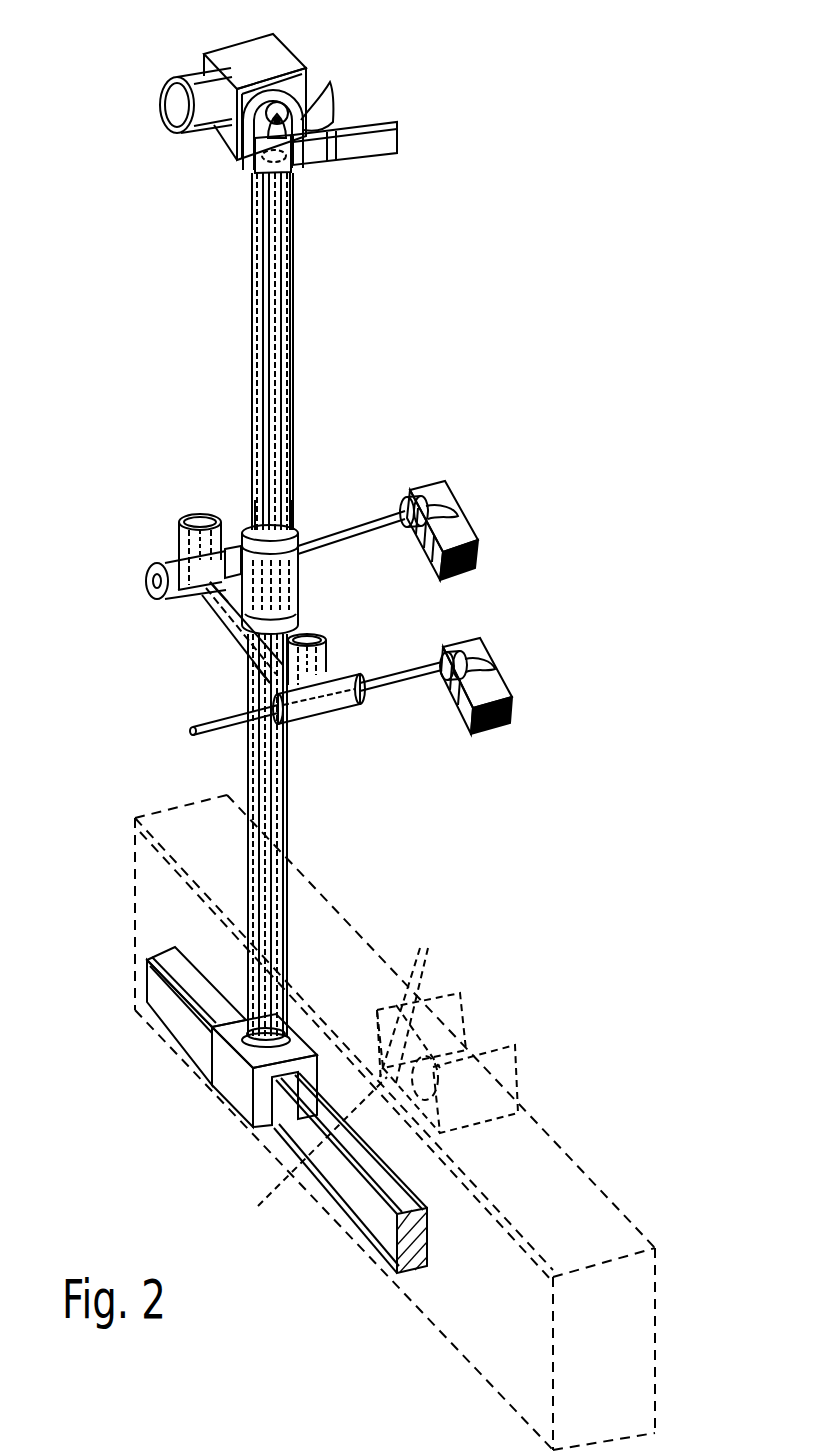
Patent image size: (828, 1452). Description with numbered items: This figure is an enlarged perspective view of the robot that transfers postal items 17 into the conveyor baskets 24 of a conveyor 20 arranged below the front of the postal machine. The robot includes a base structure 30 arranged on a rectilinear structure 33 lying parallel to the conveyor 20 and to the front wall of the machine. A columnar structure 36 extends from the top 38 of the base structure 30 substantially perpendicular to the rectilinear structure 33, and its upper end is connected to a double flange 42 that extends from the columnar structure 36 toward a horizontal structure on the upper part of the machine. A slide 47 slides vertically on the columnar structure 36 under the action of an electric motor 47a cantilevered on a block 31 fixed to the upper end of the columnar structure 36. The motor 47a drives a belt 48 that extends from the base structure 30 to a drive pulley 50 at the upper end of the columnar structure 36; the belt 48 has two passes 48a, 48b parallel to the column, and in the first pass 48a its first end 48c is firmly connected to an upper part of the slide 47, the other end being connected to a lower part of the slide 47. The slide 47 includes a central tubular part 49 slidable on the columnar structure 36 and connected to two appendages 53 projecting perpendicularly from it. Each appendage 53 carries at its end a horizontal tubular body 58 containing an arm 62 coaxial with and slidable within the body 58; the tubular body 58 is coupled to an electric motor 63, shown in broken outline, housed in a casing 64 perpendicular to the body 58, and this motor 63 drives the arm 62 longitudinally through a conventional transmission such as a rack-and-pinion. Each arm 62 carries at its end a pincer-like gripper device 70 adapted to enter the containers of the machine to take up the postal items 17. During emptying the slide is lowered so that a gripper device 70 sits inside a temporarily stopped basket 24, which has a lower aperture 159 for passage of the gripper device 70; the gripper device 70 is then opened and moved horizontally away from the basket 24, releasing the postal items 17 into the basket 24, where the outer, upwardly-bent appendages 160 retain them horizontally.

The postal items 17 is at (472, 519).
The conveyor 20 is at (636, 1203).
The conveyor baskets 24 is at (505, 1088).
The base structure 30 is at (236, 1083).
The block 31 is at (238, 60).
The rectilinear structure 33 is at (333, 1195).
The columnar structure 36 is at (268, 836).
The top 38 is at (233, 1012).
The double flange 42 is at (362, 150).
The slide 47 is at (215, 653).
The electric motor 47a is at (183, 110).
The belt 48 is at (305, 330).
The first pass 48a is at (295, 402).
The second pass 48b is at (250, 397).
The first end 48c is at (298, 527).
The central tubular part 49 is at (280, 604).
The drive pulley 50 is at (283, 108).
The appendages 53 is at (222, 607).
The tubular body 58 is at (165, 573).
The arm 62 is at (340, 535).
The electric motor 63 is at (178, 535).
The casing 64 is at (207, 518).
The pincer-like gripper device 70 is at (398, 494).
The lower aperture 159 is at (301, 1152).
The outer upwardly-bent appendages 160 is at (415, 1001).